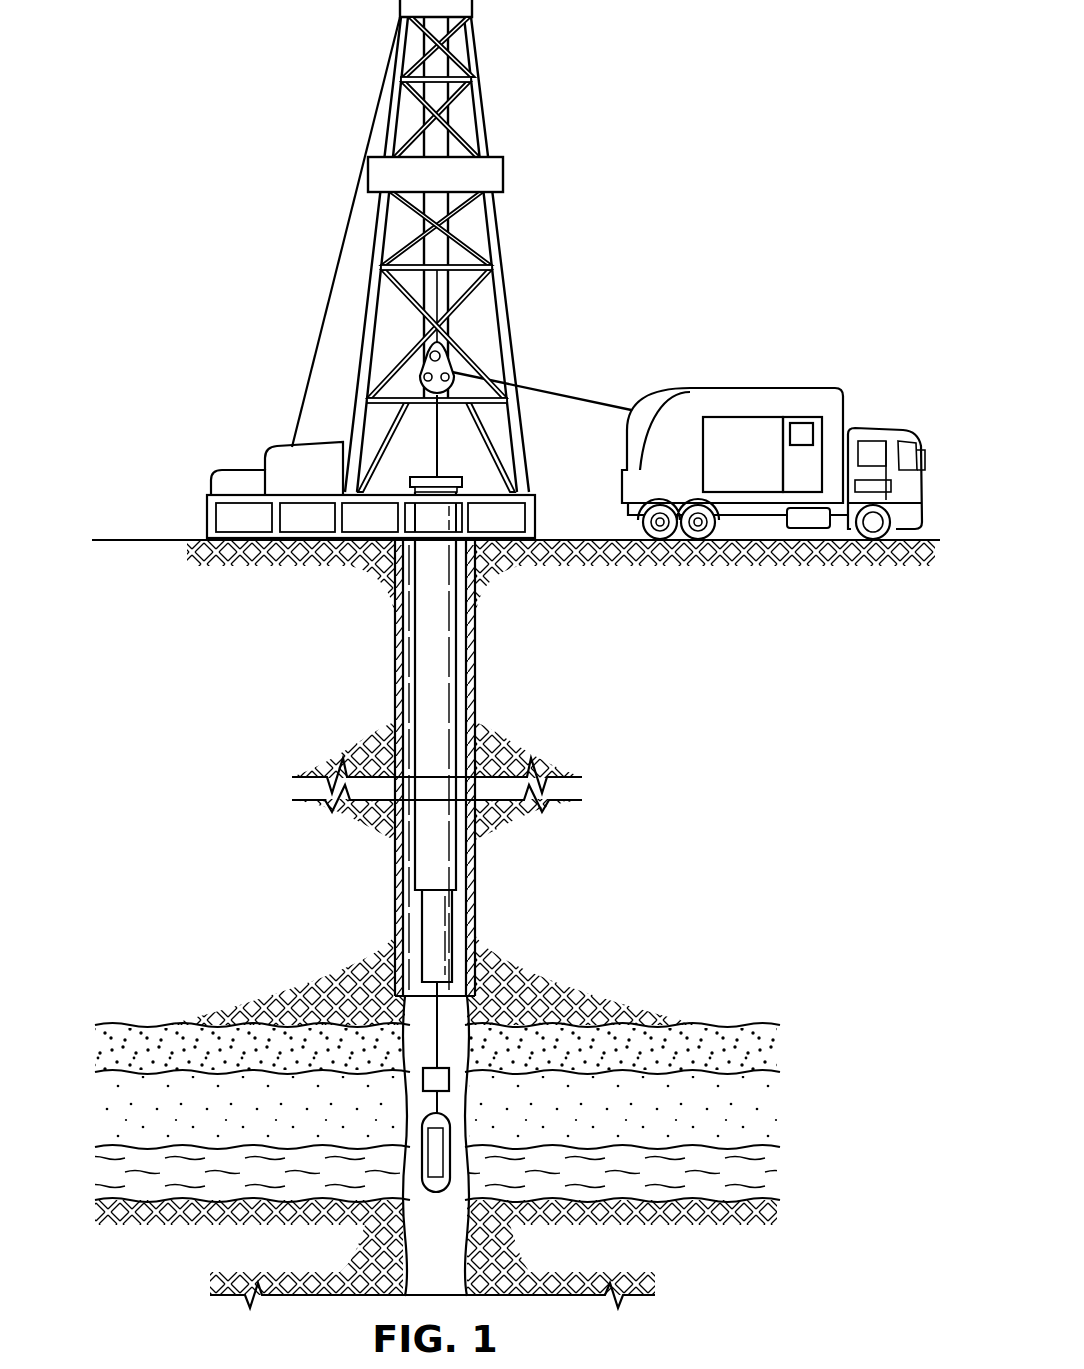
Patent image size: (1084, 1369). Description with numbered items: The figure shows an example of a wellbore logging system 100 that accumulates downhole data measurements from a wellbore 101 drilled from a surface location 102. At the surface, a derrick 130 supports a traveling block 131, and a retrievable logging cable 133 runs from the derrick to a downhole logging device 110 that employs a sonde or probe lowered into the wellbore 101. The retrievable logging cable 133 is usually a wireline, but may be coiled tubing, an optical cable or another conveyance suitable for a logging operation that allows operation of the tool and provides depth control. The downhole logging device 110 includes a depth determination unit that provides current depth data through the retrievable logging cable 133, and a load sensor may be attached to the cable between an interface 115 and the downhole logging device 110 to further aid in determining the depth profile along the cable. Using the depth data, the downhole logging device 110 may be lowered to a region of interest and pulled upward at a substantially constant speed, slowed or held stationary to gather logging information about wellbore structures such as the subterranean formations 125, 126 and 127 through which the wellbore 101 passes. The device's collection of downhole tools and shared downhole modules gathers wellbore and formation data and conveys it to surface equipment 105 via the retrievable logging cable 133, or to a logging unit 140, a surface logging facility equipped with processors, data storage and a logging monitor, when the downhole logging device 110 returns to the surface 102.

The wellbore logging system 100 is at (509, 654).
The wellbore 101 is at (405, 1050).
The surface location 102 is at (138, 538).
The surface equipment 105 is at (739, 384).
The downhole logging device 110 is at (452, 1118).
The interface 115 is at (423, 1082).
The subterranean formation 125 is at (778, 1050).
The subterranean formation 126 is at (778, 1113).
The subterranean formation 127 is at (778, 1187).
The derrick 130 is at (500, 240).
The traveling block 131 is at (453, 364).
The retrievable logging cable 133 is at (585, 398).
The logging unit 140 is at (773, 408).